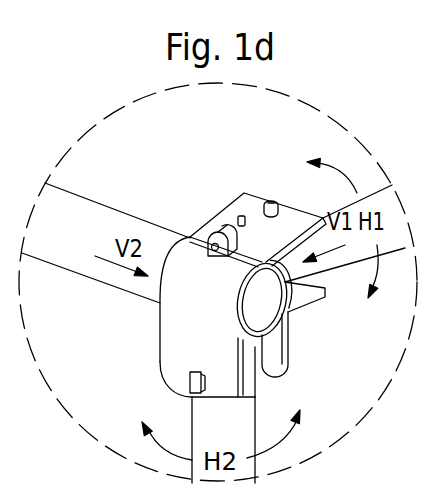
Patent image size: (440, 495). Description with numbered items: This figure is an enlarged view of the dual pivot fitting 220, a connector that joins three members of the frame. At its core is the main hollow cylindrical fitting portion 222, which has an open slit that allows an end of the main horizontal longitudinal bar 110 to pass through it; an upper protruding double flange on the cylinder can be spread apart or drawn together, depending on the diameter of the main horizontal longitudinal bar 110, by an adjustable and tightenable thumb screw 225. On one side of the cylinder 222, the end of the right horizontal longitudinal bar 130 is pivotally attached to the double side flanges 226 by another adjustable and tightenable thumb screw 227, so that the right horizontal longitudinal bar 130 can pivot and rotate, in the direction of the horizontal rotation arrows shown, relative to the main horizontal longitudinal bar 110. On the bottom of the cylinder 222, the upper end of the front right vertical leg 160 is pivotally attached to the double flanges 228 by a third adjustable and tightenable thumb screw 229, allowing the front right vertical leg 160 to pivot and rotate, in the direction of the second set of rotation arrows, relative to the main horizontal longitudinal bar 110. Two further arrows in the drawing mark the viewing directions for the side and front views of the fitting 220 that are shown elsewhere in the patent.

The main horizontal longitudinal bar 110 is at (111, 231).
The right horizontal longitudinal bar 130 is at (361, 235).
The front right vertical leg 160 is at (280, 419).
The dual pivot fitting 220 is at (224, 244).
The main hollow cylindrical fitting portion 222 is at (203, 317).
The thumb screw 225 is at (218, 198).
The double side flanges 226 is at (278, 173).
The thumb screw 227 is at (230, 159).
The double flanges 228 is at (220, 397).
The thumb screw 229 is at (187, 378).